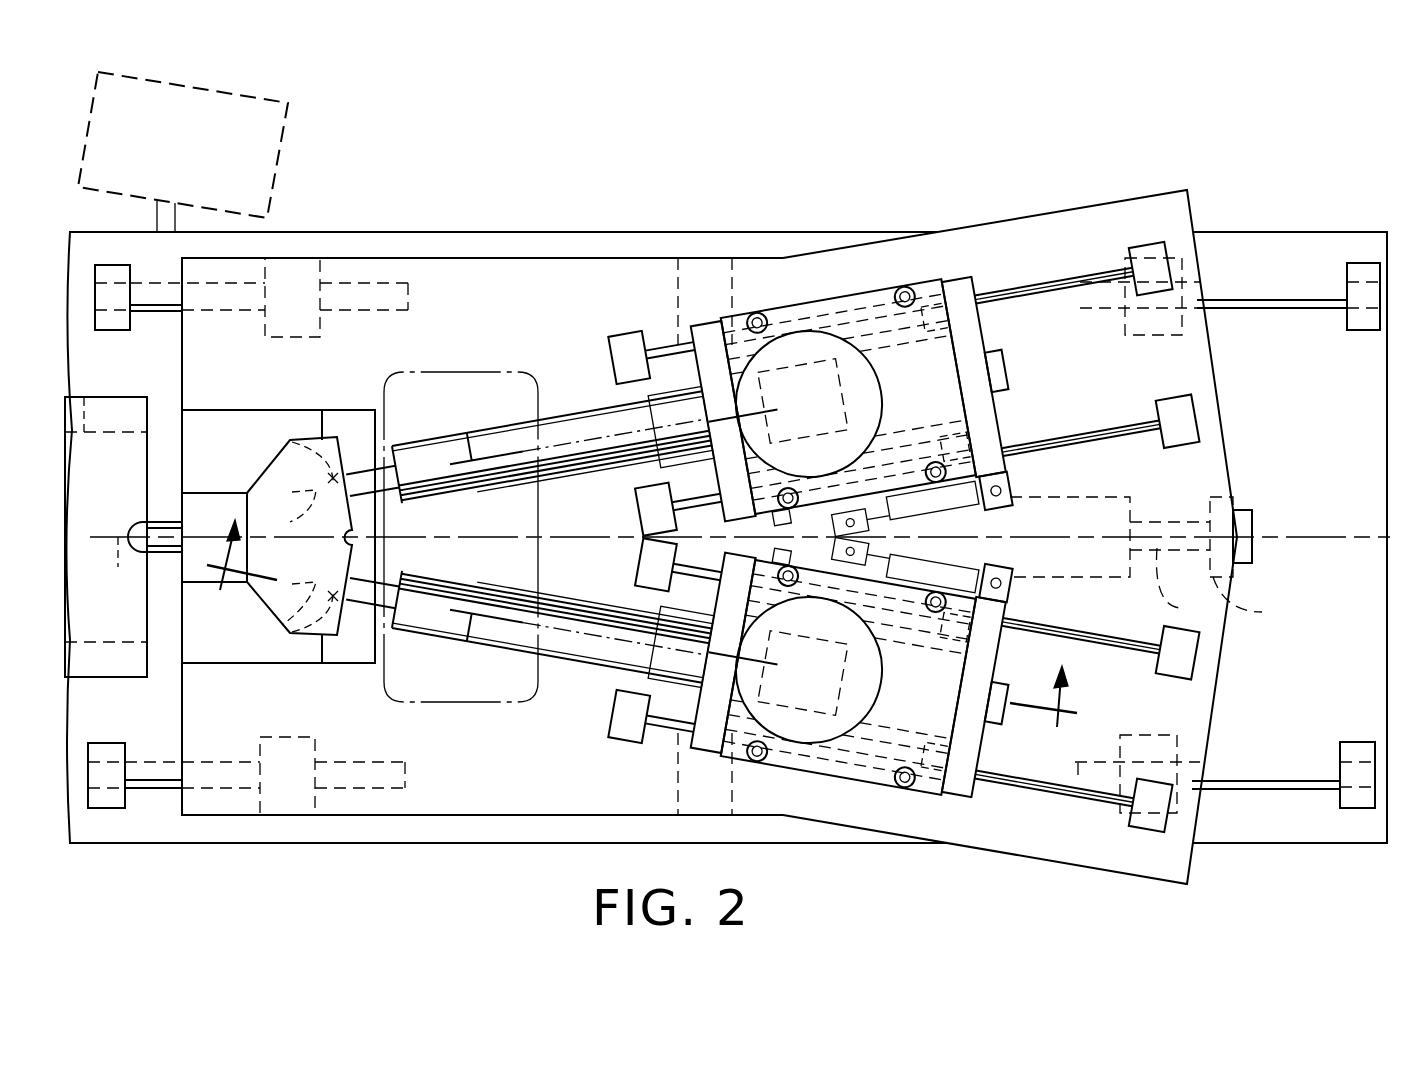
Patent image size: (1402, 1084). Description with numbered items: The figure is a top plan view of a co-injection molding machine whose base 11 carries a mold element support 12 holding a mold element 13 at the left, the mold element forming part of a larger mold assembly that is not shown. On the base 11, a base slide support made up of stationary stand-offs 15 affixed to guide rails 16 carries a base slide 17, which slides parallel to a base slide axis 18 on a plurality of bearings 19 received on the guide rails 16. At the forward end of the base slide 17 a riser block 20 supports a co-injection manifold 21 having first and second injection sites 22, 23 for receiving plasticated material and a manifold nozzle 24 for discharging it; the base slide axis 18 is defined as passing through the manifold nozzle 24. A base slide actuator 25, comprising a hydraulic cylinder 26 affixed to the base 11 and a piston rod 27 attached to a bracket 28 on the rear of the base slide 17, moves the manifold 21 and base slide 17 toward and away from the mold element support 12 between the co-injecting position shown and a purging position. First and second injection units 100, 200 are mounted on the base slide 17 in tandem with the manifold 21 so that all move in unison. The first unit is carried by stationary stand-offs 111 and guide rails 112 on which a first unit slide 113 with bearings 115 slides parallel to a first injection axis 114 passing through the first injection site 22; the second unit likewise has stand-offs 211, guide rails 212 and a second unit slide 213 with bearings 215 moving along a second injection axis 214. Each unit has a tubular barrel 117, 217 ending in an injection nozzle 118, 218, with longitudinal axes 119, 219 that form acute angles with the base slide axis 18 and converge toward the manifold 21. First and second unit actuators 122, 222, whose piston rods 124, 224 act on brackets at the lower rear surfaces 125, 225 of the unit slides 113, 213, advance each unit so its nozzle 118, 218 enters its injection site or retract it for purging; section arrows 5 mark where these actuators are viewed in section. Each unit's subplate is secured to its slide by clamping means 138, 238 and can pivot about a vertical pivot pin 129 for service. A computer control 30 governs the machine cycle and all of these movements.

The section line 5- 5 is at (640, 642).
The base 11 is at (240, 844).
The mold element support 12 is at (92, 678).
The mold element 13 is at (84, 400).
The stationary stand-offs 15 is at (106, 810).
The guide rails 16 is at (165, 797).
The base slide 17 is at (455, 816).
The base slide axis 18 is at (118, 563).
The bearings 19 is at (316, 742).
The riser block 20 is at (257, 664).
The co-injection manifold 21 is at (264, 472).
The first injection site 22 is at (330, 590).
The second injection site 23 is at (292, 442).
The manifold nozzle 24 is at (162, 520).
The base slide actuator 25 is at (1138, 499).
The hydraulic cylinder 26 is at (1110, 580).
The piston rod 27 is at (1162, 575).
The bracket 28 is at (1240, 576).
The computer control 30 is at (290, 106).
The first injection unit 100 is at (796, 692).
The stationary stand-offs 111 is at (620, 742).
The guide rails 112 is at (1098, 652).
The first unit slide 113 is at (678, 778).
The first injection axis 114 is at (296, 626).
The bearings 115 is at (790, 757).
The tubular barrel 117 is at (440, 572).
The first injection nozzle 118 is at (345, 664).
The longitudinal axis 119 is at (470, 660).
The first unit actuator 122 is at (658, 606).
The piston rod 124 is at (918, 702).
The lower rear surface 125 is at (985, 672).
The vertical pivot pin 129 is at (968, 692).
The clamping means 138 is at (918, 792).
The second injection unit 200 is at (796, 378).
The stationary stand-offs 211 is at (620, 334).
The guide rails 212 is at (1075, 262).
The second unit slide 213 is at (700, 322).
The second injection axis 214 is at (276, 513).
The bearings 215 is at (790, 310).
The tubular barrel 217 is at (600, 398).
The second injection nozzle 218 is at (347, 436).
The longitudinal axis 219 is at (458, 430).
The second unit actuator 222 is at (658, 466).
The piston rod 224 is at (925, 372).
The lower rear surface 225 is at (1000, 332).
The clamping means 238 is at (912, 282).